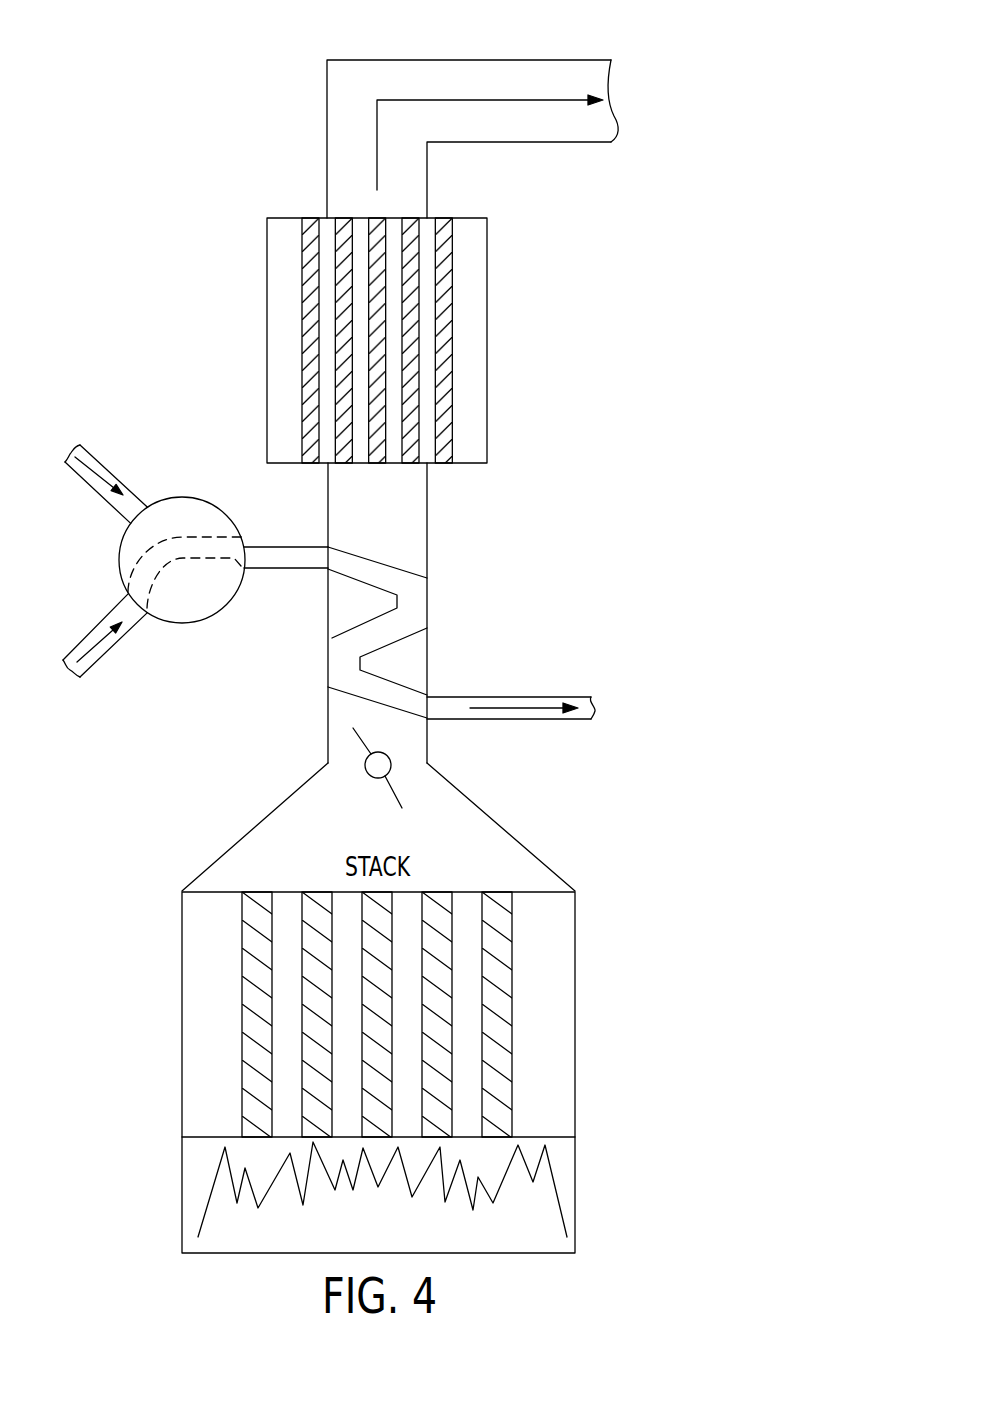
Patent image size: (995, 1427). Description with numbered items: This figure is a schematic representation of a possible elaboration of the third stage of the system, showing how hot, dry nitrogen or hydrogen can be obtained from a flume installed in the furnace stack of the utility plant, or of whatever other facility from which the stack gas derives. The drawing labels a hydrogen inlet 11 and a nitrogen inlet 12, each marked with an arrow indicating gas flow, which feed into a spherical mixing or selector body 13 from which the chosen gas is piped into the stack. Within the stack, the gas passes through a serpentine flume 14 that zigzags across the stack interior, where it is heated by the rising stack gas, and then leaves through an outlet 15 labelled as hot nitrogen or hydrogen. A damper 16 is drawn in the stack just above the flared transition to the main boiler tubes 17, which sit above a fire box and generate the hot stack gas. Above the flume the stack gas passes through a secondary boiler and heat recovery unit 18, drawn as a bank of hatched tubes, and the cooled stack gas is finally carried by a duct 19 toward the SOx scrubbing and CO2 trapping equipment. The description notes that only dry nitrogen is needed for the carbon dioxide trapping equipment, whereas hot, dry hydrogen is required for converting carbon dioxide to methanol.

The hydrogen inlet pipe 11 is at (85, 483).
The nitrogen inlet pipe 12 is at (83, 640).
The gas mixing sphere 13 is at (202, 498).
The heat exchanger coil in stack 14 is at (398, 556).
The hot gas outlet pipe 15 is at (510, 696).
The stack damper 16 is at (365, 765).
The main boiler tubes 17 is at (577, 1003).
The secondary boiler and heat recovery unit 18 is at (487, 305).
The flue gas duct to SOx scrubbing and CO2 trapping 19 is at (552, 60).